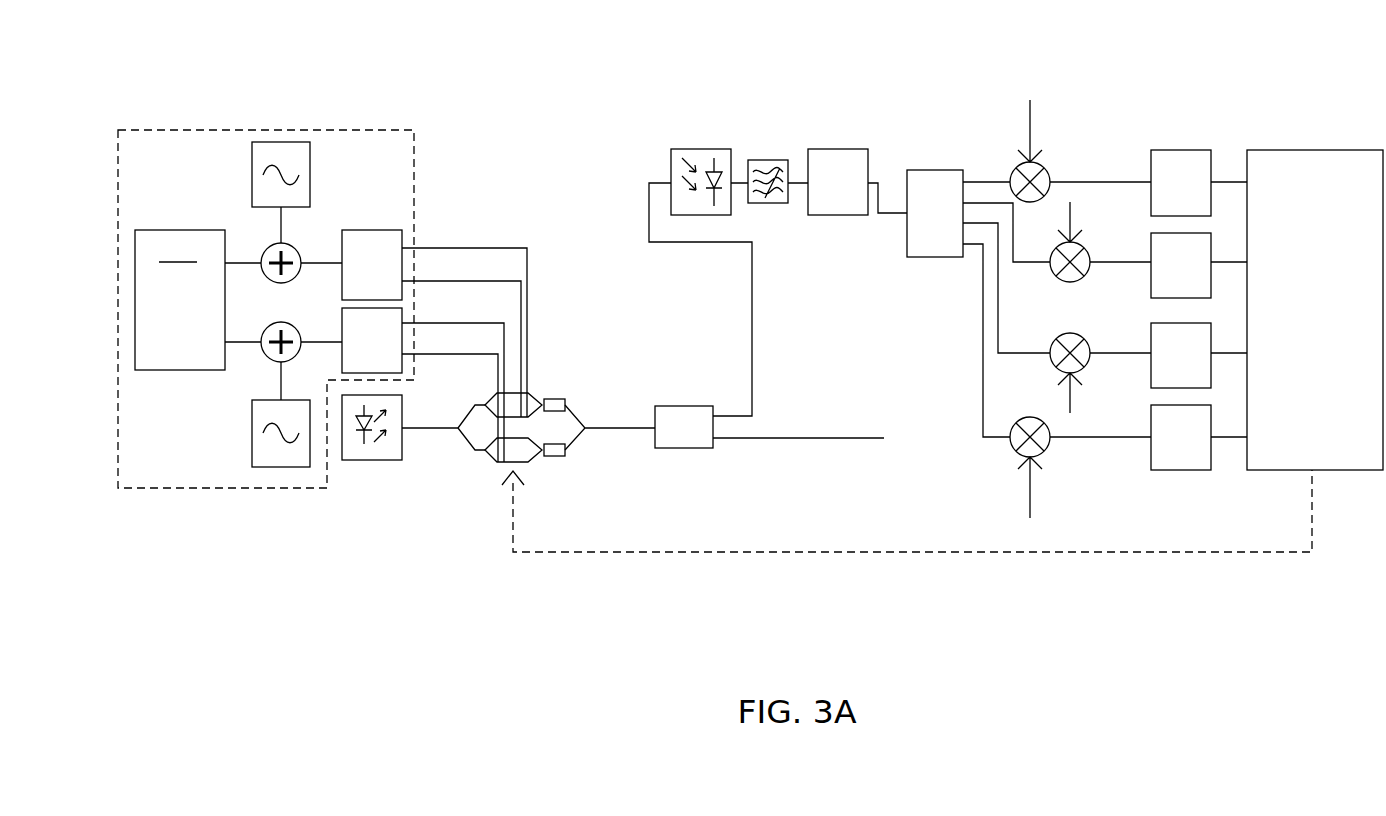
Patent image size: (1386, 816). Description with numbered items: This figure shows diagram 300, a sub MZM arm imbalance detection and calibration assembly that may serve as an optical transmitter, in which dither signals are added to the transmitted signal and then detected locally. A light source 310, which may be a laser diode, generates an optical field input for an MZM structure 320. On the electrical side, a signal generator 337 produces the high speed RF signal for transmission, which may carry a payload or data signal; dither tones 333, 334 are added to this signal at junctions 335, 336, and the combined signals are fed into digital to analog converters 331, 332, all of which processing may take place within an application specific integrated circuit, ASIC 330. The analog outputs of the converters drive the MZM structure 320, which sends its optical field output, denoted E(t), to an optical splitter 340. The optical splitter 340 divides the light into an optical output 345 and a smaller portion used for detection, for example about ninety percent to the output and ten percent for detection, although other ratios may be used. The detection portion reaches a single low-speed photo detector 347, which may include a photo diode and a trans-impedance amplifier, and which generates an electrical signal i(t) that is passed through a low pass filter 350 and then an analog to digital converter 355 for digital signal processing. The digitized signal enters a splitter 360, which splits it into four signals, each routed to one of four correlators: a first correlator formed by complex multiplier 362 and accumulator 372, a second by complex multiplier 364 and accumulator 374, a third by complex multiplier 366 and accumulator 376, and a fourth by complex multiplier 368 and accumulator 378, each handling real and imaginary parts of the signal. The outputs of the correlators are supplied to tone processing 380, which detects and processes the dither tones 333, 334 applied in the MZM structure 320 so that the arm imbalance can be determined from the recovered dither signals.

The diagram 300 is at (407, 42).
The ASIC 330 is at (145, 130).
The dither tone 334 is at (281, 142).
The dither tone 333 is at (278, 467).
The signal generator 337 is at (198, 300).
The junction 335 is at (295, 250).
The junction 336 is at (295, 330).
The digital to analog converter 332 is at (402, 243).
The digital to analog converter 331 is at (402, 322).
The light source 310 is at (352, 460).
The MZM structure 320 is at (478, 455).
The optical splitter 340 is at (683, 406).
The optical output 345 is at (862, 432).
The photo detector 347 is at (681, 149).
The low pass filter 350 is at (768, 160).
The analog to digital converter 355 is at (850, 149).
The splitter 360 is at (935, 257).
The complex multiplier 362 is at (1014, 150).
The complex multiplier 364 is at (1090, 272).
The complex multiplier 366 is at (1051, 365).
The complex multiplier 368 is at (1021, 470).
The accumulator 372 is at (1172, 150).
The accumulator 374 is at (1208, 233).
The accumulator 376 is at (1212, 380).
The accumulator 378 is at (1178, 470).
The tone processing 380 is at (1293, 200).